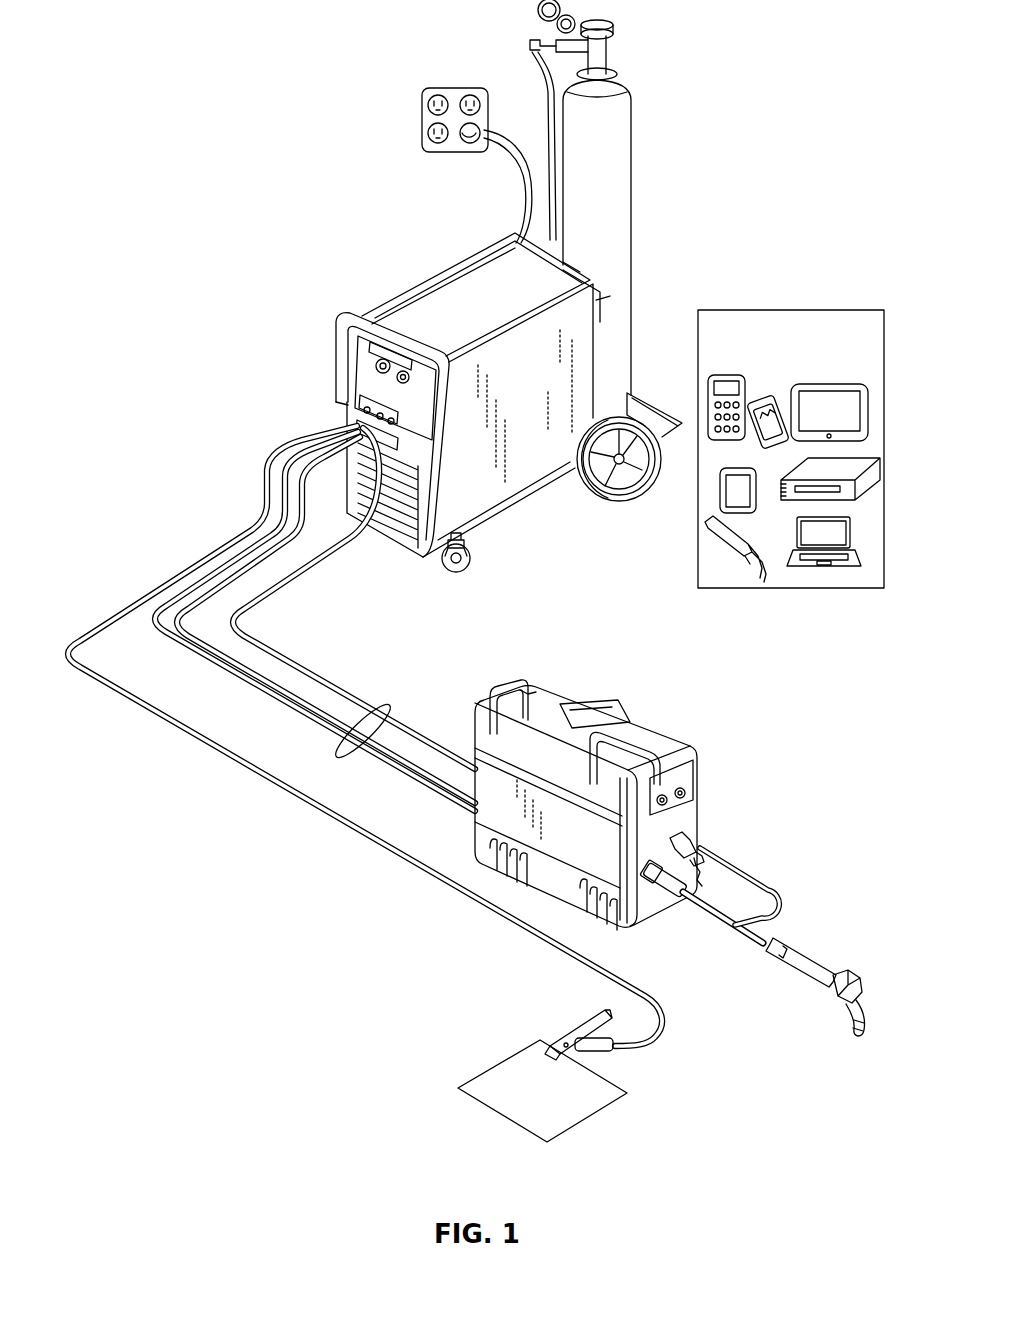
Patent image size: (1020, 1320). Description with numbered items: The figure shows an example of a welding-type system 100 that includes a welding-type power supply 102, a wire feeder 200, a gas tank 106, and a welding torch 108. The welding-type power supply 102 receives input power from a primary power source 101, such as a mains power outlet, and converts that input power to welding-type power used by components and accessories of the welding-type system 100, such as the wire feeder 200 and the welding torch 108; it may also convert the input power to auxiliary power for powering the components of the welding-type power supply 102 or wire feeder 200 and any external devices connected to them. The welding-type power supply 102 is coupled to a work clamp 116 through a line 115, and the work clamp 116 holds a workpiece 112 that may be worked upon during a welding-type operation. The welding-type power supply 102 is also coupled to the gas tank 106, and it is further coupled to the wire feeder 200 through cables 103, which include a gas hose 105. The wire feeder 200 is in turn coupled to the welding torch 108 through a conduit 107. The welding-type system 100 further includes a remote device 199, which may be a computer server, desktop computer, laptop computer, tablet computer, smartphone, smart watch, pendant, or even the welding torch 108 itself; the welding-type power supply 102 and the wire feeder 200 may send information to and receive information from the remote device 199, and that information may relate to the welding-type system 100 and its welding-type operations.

The welding-type system 100 is at (291, 230).
The primary power source 101 is at (422, 124).
The welding-type power supply 102 is at (490, 258).
The cables 103 is at (393, 706).
The gas hose 105 is at (270, 656).
The gas tank 106 is at (620, 159).
The conduit 107 is at (713, 913).
The welding torch 108 is at (812, 964).
The workpiece 112 is at (563, 1100).
The line 115 is at (92, 625).
The work clamp 116 is at (588, 1022).
The remote device 199 is at (809, 374).
The wire feeder 200 is at (655, 676).